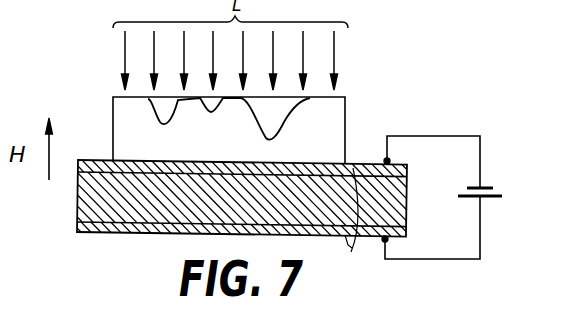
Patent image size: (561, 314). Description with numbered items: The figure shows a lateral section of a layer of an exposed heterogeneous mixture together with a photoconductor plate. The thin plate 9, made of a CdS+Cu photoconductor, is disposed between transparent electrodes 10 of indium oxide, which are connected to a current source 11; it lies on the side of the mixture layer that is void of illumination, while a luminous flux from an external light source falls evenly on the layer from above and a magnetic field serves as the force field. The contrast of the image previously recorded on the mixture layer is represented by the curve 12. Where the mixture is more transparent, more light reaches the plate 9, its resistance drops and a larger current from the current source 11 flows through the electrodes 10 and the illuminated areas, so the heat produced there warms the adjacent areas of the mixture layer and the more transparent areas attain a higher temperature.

The plate 9 is at (110, 214).
The transparent electrodes 10 is at (359, 227).
The current source 11 is at (496, 166).
The curve 12 is at (149, 99).